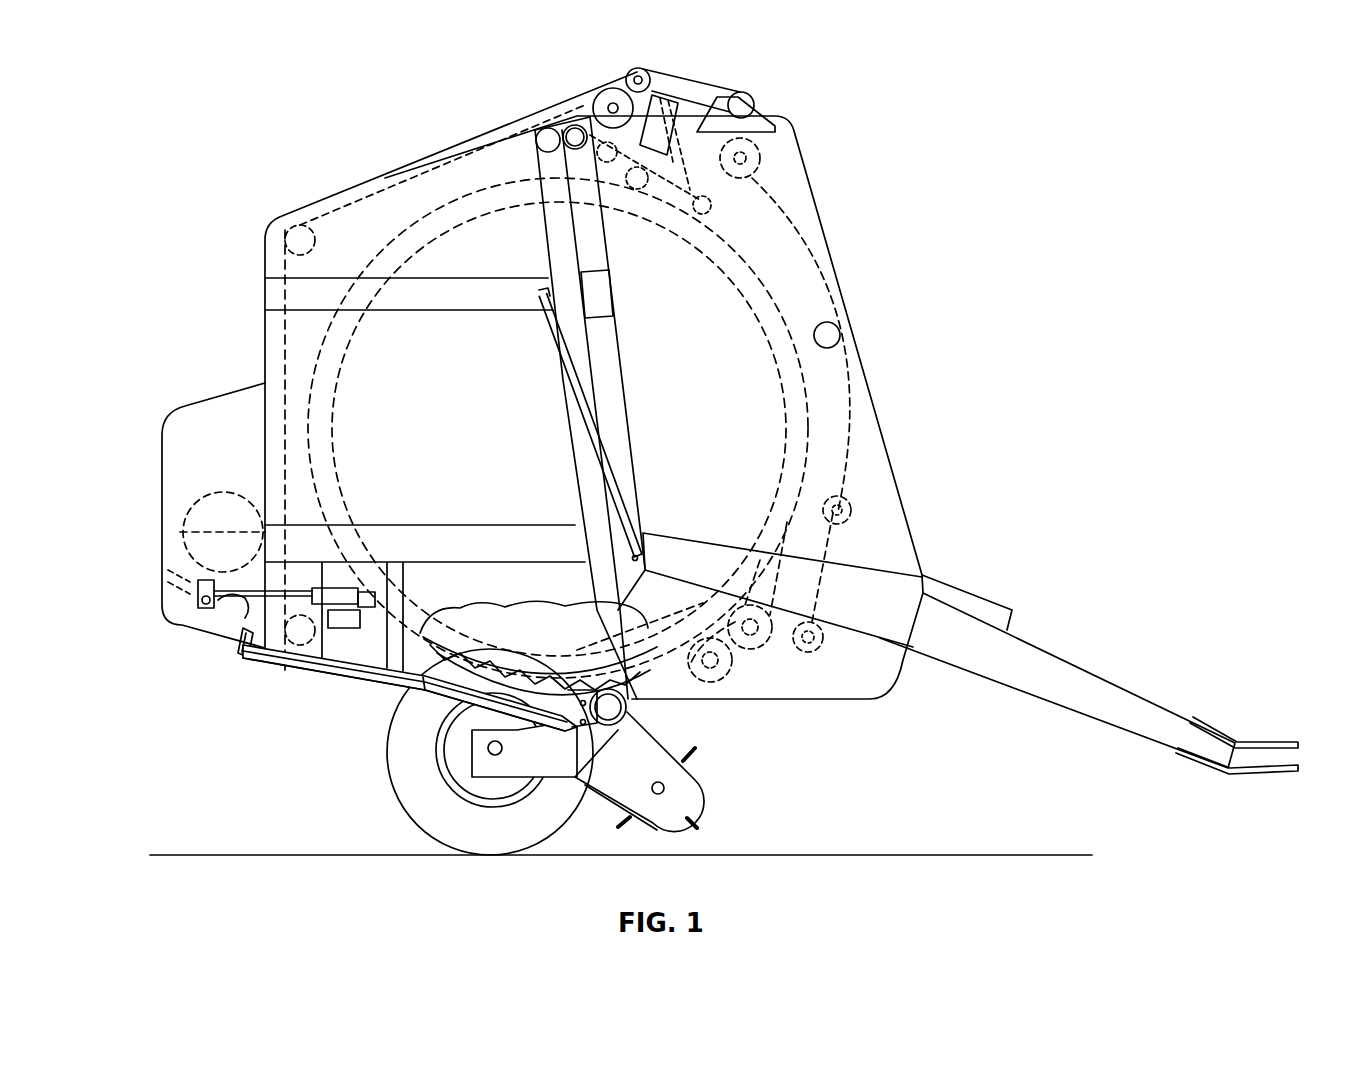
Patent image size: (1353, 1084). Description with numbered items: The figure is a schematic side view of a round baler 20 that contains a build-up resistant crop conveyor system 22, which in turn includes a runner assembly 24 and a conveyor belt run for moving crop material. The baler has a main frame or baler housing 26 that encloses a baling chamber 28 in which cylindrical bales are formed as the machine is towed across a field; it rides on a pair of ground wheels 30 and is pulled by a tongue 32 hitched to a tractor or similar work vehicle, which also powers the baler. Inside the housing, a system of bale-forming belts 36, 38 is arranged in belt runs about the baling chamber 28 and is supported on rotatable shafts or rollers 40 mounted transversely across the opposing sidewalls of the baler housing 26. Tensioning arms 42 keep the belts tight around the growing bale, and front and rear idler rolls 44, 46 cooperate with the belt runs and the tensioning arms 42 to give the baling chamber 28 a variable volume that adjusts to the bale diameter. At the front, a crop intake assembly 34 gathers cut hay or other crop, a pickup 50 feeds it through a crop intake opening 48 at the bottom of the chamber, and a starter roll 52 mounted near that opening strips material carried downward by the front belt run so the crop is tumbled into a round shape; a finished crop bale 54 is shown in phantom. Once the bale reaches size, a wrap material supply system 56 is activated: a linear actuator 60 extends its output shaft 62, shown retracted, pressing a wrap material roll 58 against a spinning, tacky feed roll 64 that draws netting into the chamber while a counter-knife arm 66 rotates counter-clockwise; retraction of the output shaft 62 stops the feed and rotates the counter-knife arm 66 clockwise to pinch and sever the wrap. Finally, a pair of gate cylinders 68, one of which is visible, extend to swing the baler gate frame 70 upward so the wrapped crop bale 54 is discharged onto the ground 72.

The round baler 20 is at (873, 127).
The build-up resistant crop conveyor system 22 is at (380, 690).
The runner assembly 24 is at (340, 672).
The baler housing 26 is at (440, 185).
The baling chamber 28 is at (332, 262).
The ground wheels 30 is at (400, 770).
The tongue 32 is at (608, 712).
The crop intake assembly 34 is at (712, 760).
The bale-forming belt 36 is at (810, 452).
The bale-forming belt 38 is at (318, 355).
The rollers 40 is at (603, 96).
The tensioning arms 42 is at (840, 333).
The front idler roll 44 is at (642, 185).
The rear idler roll 46 is at (563, 128).
The crop intake opening 48 is at (810, 286).
The pickup 50 is at (690, 800).
The starter roll 52 is at (200, 403).
The crop bale 54 is at (465, 423).
The wrap material supply system 56 is at (163, 424).
The wrap material roll 58 is at (447, 238).
The linear actuator 60 is at (345, 590).
The output shaft 62 is at (222, 605).
The feed roll 64 is at (200, 585).
The counter-knife arm 66 is at (240, 635).
The gate cylinders 68 is at (597, 420).
The baler gate frame 70 is at (268, 282).
The ground 72 is at (960, 855).